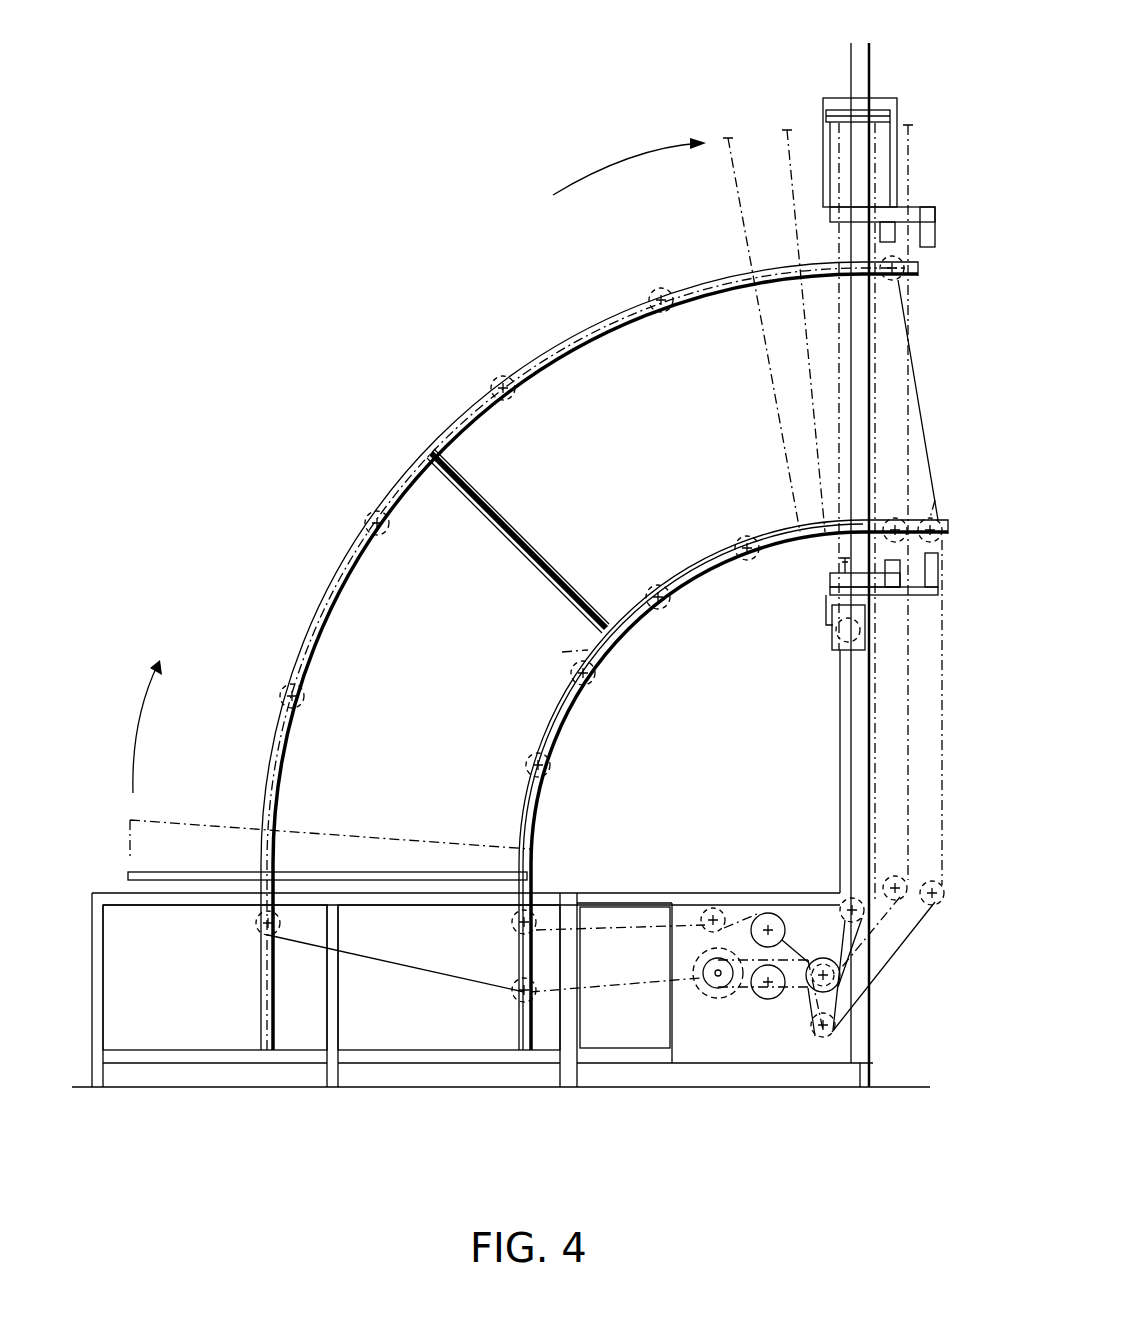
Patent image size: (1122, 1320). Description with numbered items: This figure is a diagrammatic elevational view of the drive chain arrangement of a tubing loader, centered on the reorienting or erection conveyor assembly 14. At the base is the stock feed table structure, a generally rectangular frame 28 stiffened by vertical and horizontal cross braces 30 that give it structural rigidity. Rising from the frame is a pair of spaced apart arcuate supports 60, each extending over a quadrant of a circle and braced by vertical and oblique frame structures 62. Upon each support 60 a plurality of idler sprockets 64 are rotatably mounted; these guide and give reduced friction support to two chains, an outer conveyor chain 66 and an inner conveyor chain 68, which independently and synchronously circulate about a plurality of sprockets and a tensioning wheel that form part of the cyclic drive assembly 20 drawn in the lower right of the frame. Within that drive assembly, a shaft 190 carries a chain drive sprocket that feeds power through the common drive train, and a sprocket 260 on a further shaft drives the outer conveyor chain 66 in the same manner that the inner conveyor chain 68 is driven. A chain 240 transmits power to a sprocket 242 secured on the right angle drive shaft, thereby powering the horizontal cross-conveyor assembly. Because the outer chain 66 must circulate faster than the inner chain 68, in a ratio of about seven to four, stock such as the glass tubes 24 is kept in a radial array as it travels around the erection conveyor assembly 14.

The erection conveyor assembly 14 is at (360, 221).
The cyclic drive assembly 20 is at (778, 1112).
The glass tubes 24 is at (180, 872).
The rectangular frame 28 is at (138, 910).
The cross braces 30 is at (125, 1048).
The arcuate supports 60 is at (665, 585).
The frame structures 62 is at (523, 545).
The idler sprockets 64 is at (503, 400).
The outer conveyor chain 66 is at (357, 548).
The inner conveyor chain 68 is at (583, 652).
The shaft 190 is at (720, 978).
The chain 240 is at (838, 765).
The sprocket 242 is at (843, 640).
The sprocket 260 is at (711, 872).